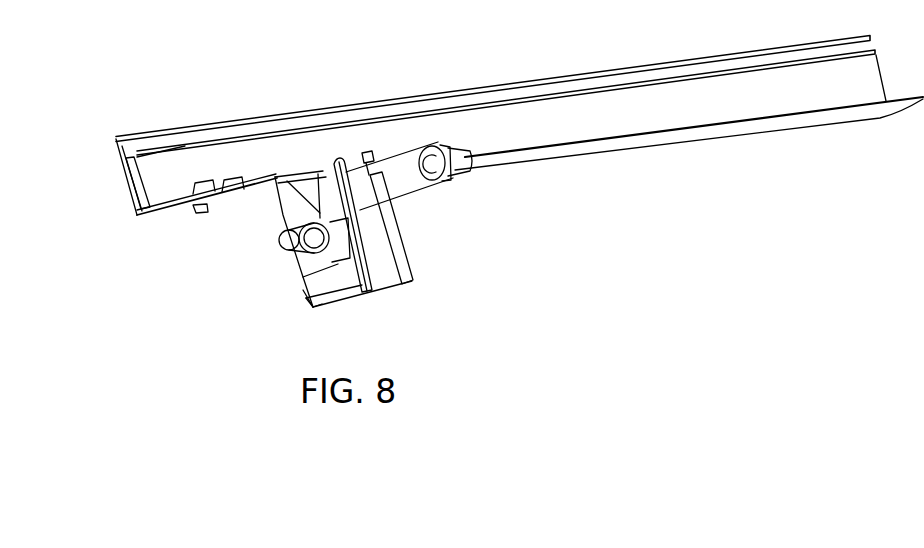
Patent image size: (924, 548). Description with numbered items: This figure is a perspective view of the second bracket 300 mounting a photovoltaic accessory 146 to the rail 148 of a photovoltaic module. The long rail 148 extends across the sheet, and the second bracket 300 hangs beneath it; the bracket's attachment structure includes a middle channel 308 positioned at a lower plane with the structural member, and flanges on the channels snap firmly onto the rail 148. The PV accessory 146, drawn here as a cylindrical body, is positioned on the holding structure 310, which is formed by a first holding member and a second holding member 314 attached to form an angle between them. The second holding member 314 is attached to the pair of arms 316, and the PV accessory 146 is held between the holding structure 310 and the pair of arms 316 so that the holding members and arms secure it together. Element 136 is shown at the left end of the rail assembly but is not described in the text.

The rail bracket 136 is at (245, 177).
The PV accessory 146 is at (285, 217).
The rail 148 is at (578, 87).
The second bracket 300 is at (305, 167).
The middle channel 308 is at (217, 210).
The holding structure 310 is at (313, 307).
The second holding member 314 is at (365, 295).
The pair of arms 316 is at (402, 240).